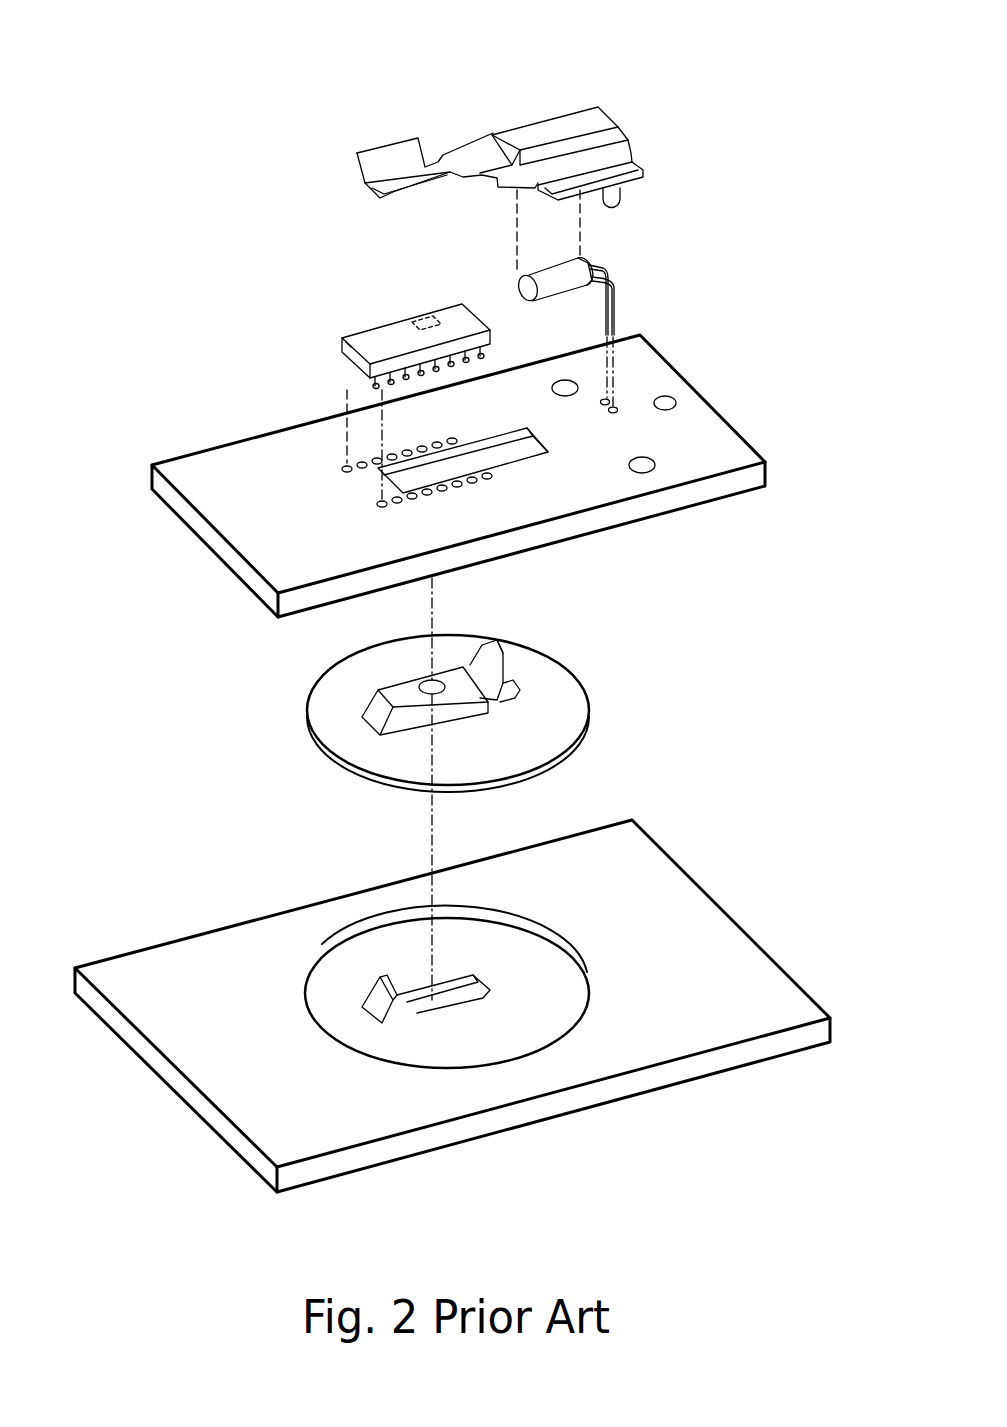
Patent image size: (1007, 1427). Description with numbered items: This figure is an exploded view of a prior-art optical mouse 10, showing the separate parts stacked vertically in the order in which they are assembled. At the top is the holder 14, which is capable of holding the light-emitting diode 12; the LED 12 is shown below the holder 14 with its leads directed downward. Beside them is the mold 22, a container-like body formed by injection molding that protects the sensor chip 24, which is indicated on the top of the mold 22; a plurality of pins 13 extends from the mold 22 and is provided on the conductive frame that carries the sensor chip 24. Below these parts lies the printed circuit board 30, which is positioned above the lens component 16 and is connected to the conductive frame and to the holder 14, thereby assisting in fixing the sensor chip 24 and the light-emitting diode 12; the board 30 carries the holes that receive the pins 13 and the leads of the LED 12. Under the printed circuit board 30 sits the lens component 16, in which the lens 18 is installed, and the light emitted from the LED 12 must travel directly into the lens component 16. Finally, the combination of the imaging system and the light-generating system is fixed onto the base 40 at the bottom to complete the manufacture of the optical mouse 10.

The optical mouse 10 is at (738, 138).
The light-emitting diode 12 is at (524, 278).
The pins 13 is at (378, 376).
The holder 14 is at (540, 133).
The lens component 16 is at (485, 657).
The lens 18 is at (430, 693).
The mold 22 is at (357, 338).
The sensor chip 24 is at (425, 323).
The printed circuit board 30 is at (693, 467).
The base 40 is at (645, 910).